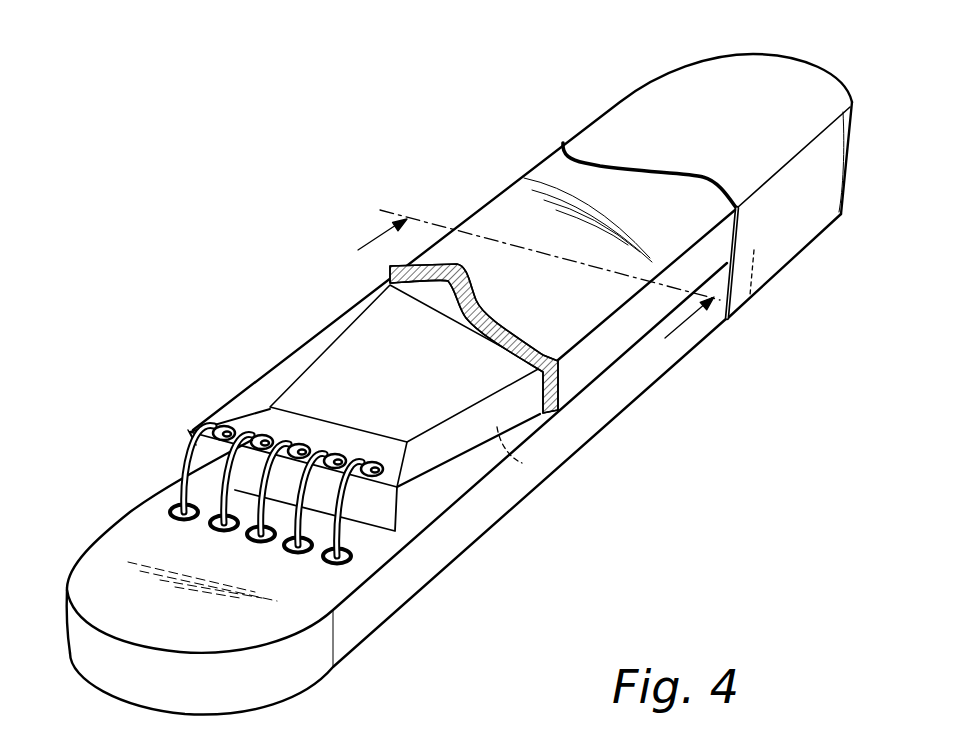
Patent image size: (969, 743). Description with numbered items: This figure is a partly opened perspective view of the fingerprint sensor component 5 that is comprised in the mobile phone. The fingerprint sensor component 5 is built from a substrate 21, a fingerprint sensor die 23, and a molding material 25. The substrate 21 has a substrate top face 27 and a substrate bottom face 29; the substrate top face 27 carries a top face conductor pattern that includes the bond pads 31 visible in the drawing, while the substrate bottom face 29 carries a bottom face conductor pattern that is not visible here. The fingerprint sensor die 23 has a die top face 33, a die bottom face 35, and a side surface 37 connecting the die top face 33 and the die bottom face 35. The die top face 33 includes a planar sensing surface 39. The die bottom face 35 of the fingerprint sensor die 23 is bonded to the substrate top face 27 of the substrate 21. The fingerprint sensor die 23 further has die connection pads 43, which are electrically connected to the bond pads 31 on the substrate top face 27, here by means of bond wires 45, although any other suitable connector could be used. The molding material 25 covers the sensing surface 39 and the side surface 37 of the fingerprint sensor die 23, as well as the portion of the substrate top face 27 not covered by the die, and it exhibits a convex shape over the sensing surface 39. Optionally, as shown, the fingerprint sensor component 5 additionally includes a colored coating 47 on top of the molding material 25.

The fingerprint sensor component 5 is at (542, 90).
The substrate 21 is at (590, 440).
The fingerprint sensor die 23 is at (545, 390).
The molding material 25 is at (512, 208).
The substrate top face 27 is at (462, 494).
The substrate bottom face 29 is at (750, 295).
The bond pads 31 is at (170, 507).
The die top face 33 is at (264, 417).
The die bottom face 35 is at (522, 463).
The side surface 37 is at (414, 492).
The planar sensing surface 39 is at (390, 356).
The die connection pads 43 is at (208, 421).
The bond wires 45 is at (187, 459).
The colored coating 47 is at (637, 150).